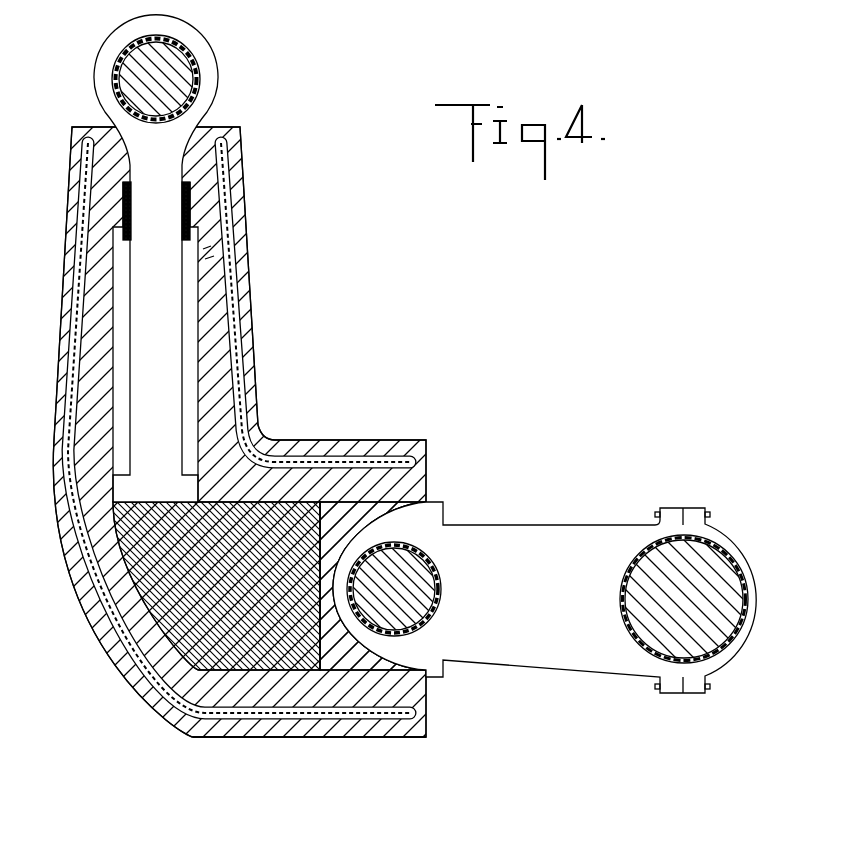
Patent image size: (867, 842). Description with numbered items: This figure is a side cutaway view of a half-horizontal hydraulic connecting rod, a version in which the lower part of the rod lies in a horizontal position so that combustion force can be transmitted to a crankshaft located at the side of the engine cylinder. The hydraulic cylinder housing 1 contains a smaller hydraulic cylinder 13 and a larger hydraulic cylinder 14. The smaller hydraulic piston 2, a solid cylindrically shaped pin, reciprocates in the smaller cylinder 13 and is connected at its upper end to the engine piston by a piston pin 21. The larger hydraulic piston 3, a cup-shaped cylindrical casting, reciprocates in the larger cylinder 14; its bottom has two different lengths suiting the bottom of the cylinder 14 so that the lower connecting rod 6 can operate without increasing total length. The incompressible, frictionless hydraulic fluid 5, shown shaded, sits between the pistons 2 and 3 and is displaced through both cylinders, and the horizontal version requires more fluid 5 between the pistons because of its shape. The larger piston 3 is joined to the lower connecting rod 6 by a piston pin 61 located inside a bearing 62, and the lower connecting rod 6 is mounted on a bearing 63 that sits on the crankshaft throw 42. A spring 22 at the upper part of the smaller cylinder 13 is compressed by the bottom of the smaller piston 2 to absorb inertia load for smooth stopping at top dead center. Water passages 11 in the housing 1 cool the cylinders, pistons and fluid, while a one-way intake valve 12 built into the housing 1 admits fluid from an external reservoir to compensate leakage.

The hydraulic cylinder housing 1 is at (222, 133).
The smaller hydraulic piston 2 is at (143, 268).
The larger hydraulic piston 3 is at (400, 510).
The hydraulic fluid 5 is at (193, 725).
The lower connecting rod 6 is at (540, 543).
The water passages 11 is at (72, 400).
The one-way intake valve 12 is at (232, 247).
The smaller hydraulic cylinder 13 is at (112, 330).
The larger hydraulic cylinder 14 is at (122, 642).
The piston pin 21 is at (183, 70).
The spring 22 is at (127, 202).
The crankshaft throw 42 is at (660, 633).
The piston pin 61 is at (413, 613).
The bearing 62 is at (430, 560).
The bearing 63 is at (730, 662).